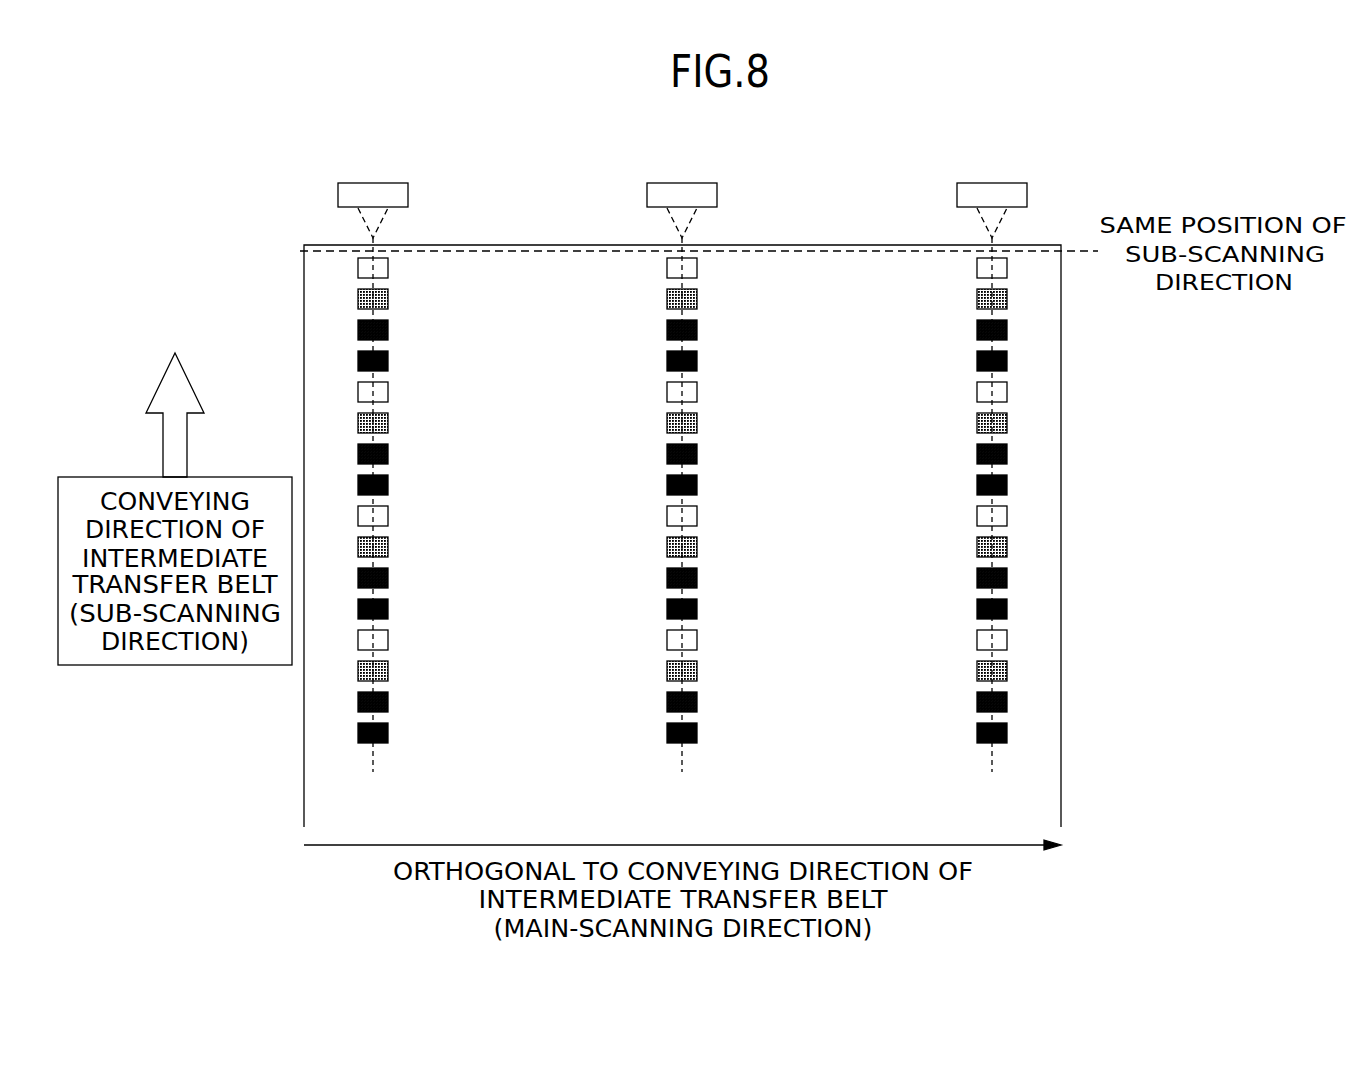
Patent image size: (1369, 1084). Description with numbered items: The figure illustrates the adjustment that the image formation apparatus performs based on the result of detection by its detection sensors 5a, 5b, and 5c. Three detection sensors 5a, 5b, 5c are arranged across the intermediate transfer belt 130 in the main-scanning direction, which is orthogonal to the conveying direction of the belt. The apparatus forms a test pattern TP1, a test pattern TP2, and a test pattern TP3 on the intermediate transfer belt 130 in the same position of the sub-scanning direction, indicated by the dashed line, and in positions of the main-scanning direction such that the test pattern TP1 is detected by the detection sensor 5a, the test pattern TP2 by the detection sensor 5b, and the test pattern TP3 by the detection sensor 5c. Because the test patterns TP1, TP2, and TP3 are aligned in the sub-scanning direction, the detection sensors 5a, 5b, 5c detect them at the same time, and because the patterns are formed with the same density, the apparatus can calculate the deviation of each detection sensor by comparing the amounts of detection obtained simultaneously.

The detection sensor 5a is at (371, 183).
The detection sensor 5b is at (680, 183).
The detection sensor 5c is at (990, 183).
The intermediate transfer belt 130 is at (828, 245).
The test pattern TP1 is at (388, 270).
The test pattern TP2 is at (697, 270).
The test pattern TP3 is at (977, 267).